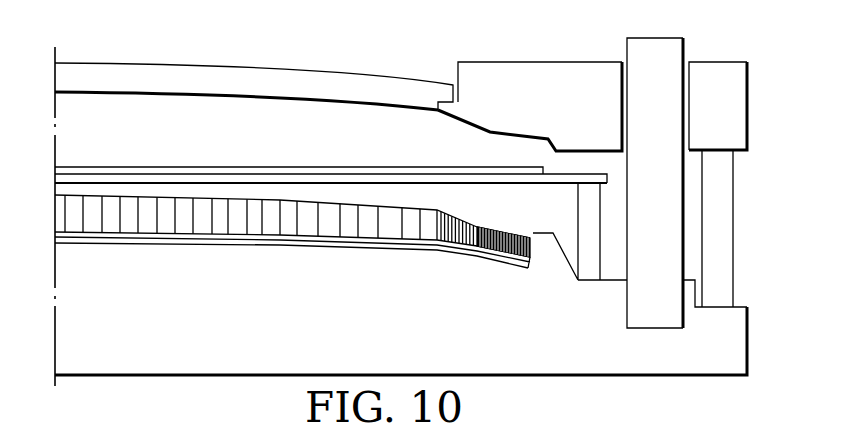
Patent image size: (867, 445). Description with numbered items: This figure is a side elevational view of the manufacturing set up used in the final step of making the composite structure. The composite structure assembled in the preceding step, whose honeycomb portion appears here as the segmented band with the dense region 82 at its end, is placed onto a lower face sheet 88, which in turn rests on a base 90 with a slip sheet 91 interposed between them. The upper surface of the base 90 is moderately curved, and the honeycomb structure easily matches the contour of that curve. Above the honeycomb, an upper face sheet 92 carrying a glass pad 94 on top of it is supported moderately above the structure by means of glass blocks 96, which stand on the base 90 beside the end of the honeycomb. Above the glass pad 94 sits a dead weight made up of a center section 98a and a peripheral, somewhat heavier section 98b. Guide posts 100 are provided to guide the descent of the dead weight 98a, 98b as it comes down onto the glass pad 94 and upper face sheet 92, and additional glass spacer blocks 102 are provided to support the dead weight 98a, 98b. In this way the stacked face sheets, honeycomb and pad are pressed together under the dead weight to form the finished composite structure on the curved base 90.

The dense segment block 82 is at (493, 235).
The lower face sheet 88 is at (294, 238).
The base 90 is at (428, 316).
The slip sheet 91 is at (352, 244).
The upper face sheet 92 is at (413, 180).
The glass pad 94 is at (337, 170).
The glass blocks 96 is at (587, 278).
The center section 98a is at (403, 80).
The peripheral section 98b is at (553, 66).
The guide posts 100 is at (670, 40).
The glass spacer blocks 102 is at (735, 196).